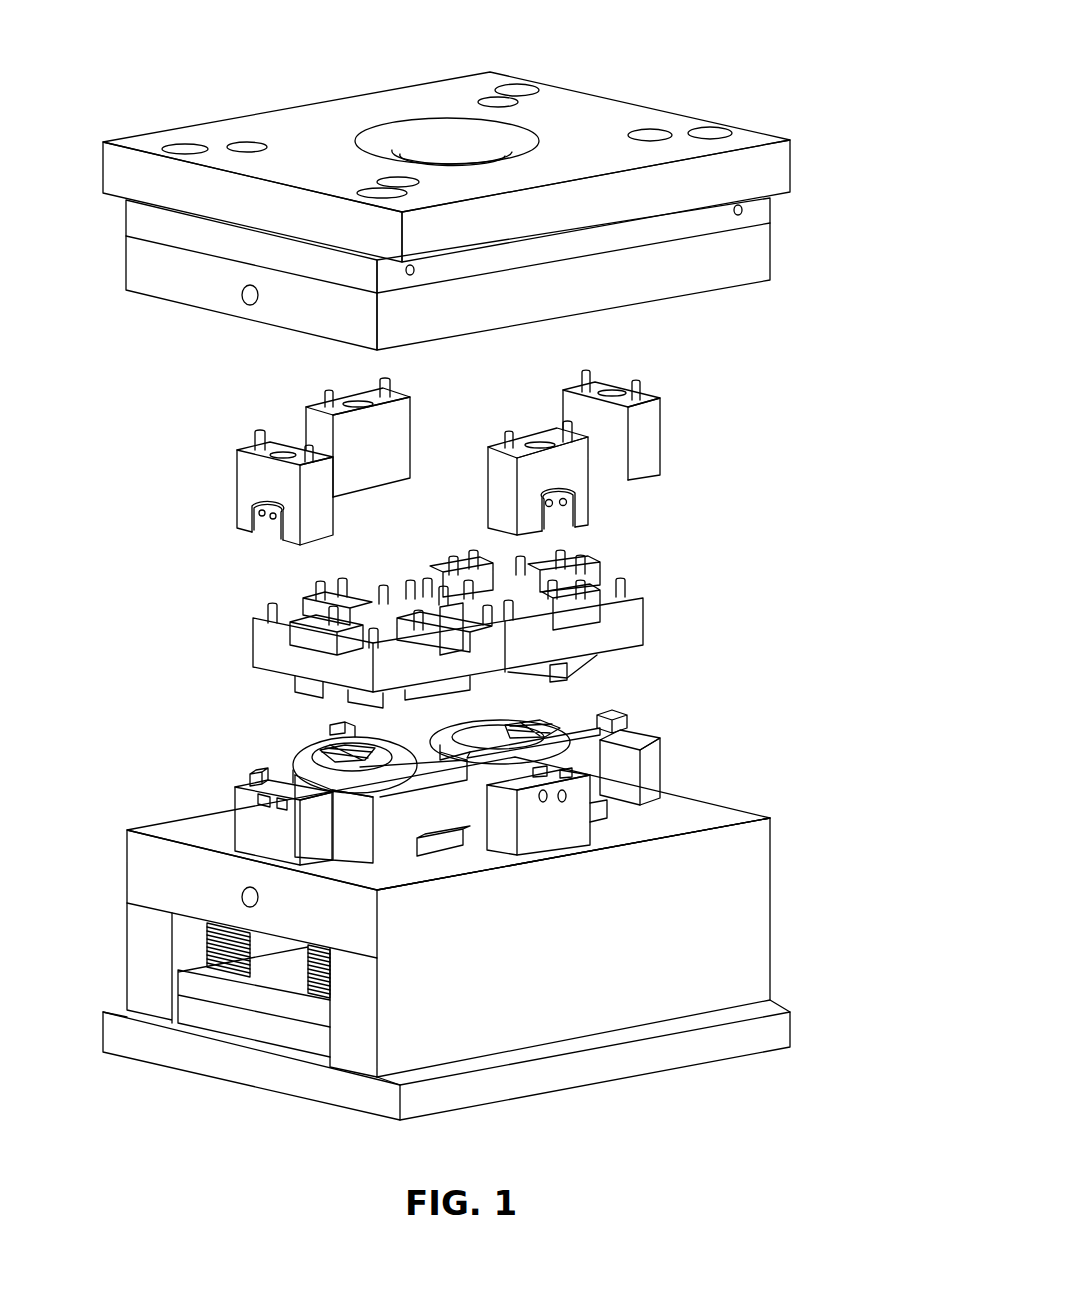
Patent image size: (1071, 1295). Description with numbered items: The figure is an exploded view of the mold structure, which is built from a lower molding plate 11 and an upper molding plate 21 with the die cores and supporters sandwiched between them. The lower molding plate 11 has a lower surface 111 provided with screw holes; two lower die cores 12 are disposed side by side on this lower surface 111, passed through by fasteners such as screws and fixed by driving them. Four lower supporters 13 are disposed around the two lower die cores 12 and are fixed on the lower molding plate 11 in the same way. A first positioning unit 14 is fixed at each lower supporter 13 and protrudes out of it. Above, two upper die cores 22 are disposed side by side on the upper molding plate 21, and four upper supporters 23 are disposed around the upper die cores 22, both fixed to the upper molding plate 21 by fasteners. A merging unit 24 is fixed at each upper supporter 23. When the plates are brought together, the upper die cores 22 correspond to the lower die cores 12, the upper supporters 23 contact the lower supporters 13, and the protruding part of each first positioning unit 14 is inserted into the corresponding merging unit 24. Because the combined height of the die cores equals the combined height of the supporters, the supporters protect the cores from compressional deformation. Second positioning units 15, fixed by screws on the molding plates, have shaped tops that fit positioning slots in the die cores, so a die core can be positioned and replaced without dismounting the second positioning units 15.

The upper molding plate 21 is at (622, 110).
The upper supporter 23 is at (317, 420).
The merging unit 24 is at (270, 530).
The upper die core 22 is at (265, 648).
The second positioning unit 15 is at (270, 612).
The lower die core 12 is at (292, 755).
The first positioning unit 14 is at (255, 782).
The lower supporter 13 is at (277, 845).
The lower molding plate 11 is at (135, 890).
The lower surface 111 is at (768, 818).